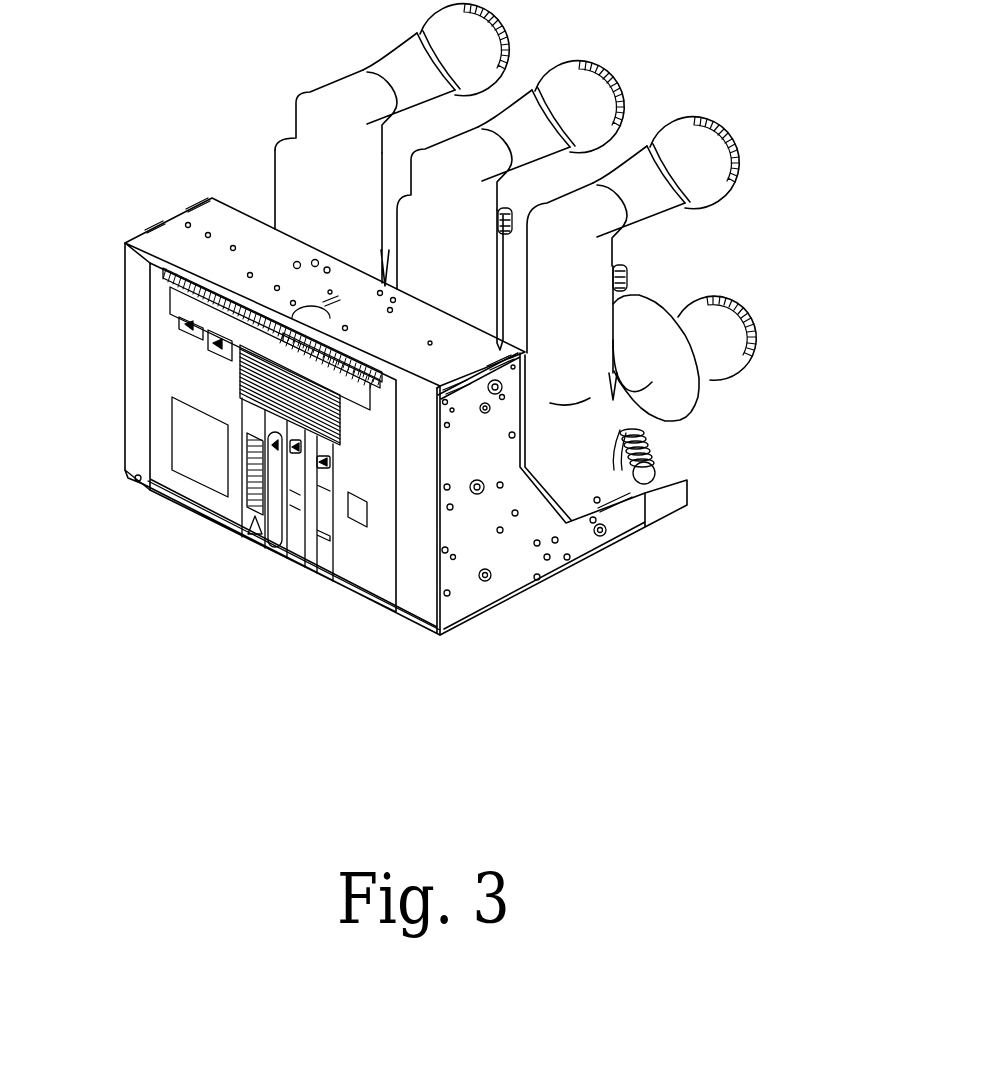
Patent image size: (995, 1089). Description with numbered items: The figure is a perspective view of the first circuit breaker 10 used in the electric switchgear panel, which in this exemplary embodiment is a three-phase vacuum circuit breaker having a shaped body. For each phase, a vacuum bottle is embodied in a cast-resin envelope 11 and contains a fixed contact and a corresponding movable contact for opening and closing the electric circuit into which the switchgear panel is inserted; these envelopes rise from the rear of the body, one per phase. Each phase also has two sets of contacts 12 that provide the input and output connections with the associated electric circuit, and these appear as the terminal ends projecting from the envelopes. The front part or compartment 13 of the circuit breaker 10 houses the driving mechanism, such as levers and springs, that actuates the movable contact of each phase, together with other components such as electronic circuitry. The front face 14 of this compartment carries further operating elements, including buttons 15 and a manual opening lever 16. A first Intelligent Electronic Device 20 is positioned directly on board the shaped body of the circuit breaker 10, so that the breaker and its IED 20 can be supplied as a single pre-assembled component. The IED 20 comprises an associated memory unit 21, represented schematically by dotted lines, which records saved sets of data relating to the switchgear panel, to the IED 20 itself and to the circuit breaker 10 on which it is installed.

The first circuit breaker 10 is at (112, 158).
The cast-resin envelope 11 is at (578, 303).
The sets of contacts 12 is at (722, 137).
The front part or compartment 13 is at (484, 545).
The front face 14 is at (372, 572).
The buttons 15 is at (320, 460).
The manual opening lever 16 is at (272, 456).
The first Intelligent Electronic Device 20 is at (220, 353).
The associated memory unit 21 is at (185, 330).